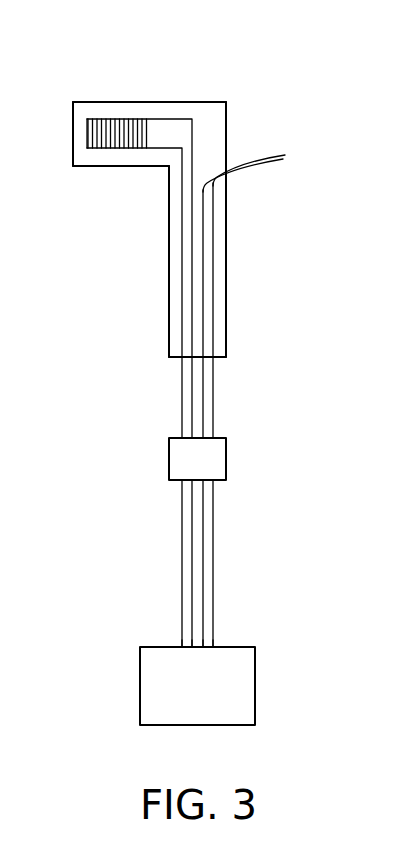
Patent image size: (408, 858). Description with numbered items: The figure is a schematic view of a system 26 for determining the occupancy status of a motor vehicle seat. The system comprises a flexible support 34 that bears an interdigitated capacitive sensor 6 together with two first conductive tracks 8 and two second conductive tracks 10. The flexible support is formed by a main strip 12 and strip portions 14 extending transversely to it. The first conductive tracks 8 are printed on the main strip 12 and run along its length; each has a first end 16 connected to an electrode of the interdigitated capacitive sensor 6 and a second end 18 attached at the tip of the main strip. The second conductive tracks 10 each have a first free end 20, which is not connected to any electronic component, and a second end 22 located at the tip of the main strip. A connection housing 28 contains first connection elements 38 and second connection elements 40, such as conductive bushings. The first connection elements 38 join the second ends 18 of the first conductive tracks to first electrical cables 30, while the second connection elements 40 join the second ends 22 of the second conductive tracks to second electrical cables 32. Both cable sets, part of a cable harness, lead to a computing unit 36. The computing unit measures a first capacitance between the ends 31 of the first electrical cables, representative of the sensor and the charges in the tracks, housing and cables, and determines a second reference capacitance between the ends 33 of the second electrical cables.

The interdigitated capacitive sensor 6 is at (93, 148).
The first conductive tracks 8 is at (192, 287).
The second conductive tracks 10 is at (203, 335).
The main strip 12 is at (226, 132).
The strip portions 14 is at (93, 102).
The first end 16 is at (177, 147).
The second end 18 is at (178, 438).
The first free end 20 is at (257, 168).
The second end 22 is at (208, 438).
The system for determining the occupancy status 26 is at (72, 725).
The connection housing 28 is at (226, 457).
The first electrical cables 30 is at (192, 507).
The ends of the first electrical cables 31 is at (190, 646).
The second electrical cables 32 is at (203, 495).
The ends of the second electrical cables 33 is at (205, 646).
The flexible support 34 is at (226, 258).
The computing unit 36 is at (255, 683).
The first connection elements 38 is at (188, 438).
The second connection elements 40 is at (218, 438).